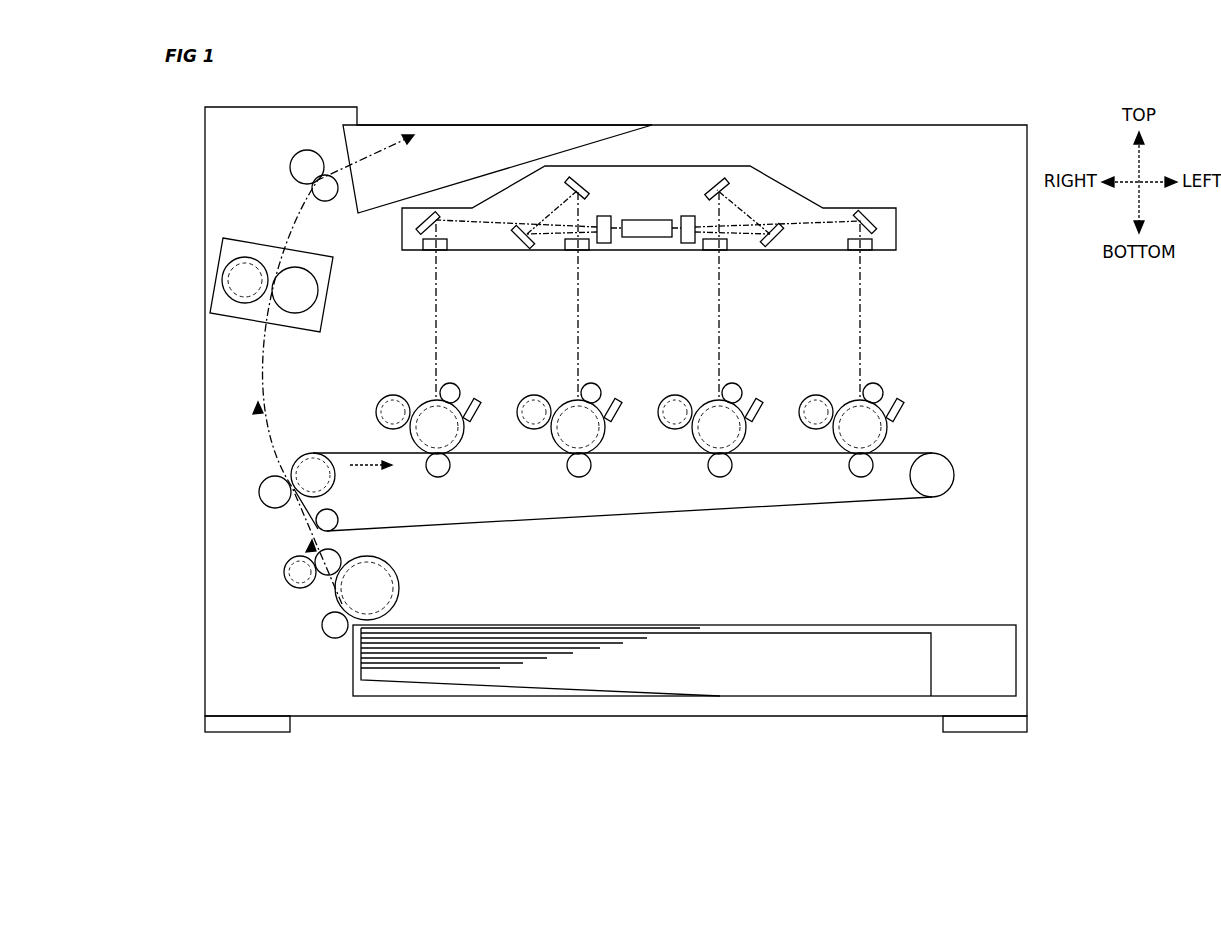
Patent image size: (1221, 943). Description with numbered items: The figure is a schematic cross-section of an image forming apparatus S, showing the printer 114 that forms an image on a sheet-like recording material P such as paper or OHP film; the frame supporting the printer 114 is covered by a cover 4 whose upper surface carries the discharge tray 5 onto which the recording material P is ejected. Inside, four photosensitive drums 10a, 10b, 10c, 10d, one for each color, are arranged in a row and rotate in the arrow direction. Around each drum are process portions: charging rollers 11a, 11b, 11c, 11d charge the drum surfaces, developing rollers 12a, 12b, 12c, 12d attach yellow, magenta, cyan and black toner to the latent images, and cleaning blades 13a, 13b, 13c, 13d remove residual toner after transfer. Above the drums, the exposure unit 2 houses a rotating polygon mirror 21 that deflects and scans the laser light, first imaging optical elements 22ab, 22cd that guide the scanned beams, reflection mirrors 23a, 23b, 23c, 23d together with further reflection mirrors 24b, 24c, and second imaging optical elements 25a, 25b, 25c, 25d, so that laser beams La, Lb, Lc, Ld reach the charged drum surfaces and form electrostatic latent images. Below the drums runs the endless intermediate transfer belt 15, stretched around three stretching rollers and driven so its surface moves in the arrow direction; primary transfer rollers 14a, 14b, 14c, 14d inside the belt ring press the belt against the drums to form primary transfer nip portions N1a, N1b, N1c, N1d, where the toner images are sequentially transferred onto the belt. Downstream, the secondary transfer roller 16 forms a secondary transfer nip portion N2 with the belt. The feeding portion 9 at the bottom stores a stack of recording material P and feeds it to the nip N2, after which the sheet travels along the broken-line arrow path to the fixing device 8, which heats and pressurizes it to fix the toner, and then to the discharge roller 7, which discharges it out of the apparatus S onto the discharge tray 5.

The exposure unit 2 is at (712, 164).
The cover 4 is at (982, 124).
The discharge tray 5 is at (492, 170).
The discharge roller 7 is at (300, 175).
The fixing device 8 is at (228, 252).
The feeding portion 9 is at (840, 626).
The photosensitive drum 10a is at (437, 427).
The photosensitive drum 10b is at (578, 427).
The photosensitive drum 10c is at (719, 427).
The photosensitive drum 10d is at (860, 427).
The charging roller 11a is at (455, 384).
The charging roller 11b is at (596, 384).
The charging roller 11c is at (737, 384).
The charging roller 11d is at (878, 384).
The developing roller 12a is at (388, 396).
The developing roller 12b is at (529, 396).
The developing roller 12c is at (670, 396).
The developing roller 12d is at (811, 396).
The cleaning blade 13a is at (478, 418).
The cleaning blade 13b is at (619, 418).
The cleaning blade 13c is at (760, 418).
The cleaning blade 13d is at (901, 418).
The primary transfer roller 14a is at (438, 477).
The primary transfer roller 14b is at (579, 477).
The primary transfer roller 14c is at (720, 477).
The primary transfer roller 14d is at (861, 477).
The intermediate transfer belt 15 is at (681, 513).
The secondary transfer roller 16 is at (262, 491).
The rotating polygon mirror 21 is at (645, 238).
The first imaging optical element 22ab is at (604, 214).
The first imaging optical element 22cd is at (686, 214).
The reflection mirror 23a is at (430, 216).
The reflection mirror 23b is at (518, 243).
The reflection mirror 23c is at (772, 243).
The reflection mirror 23d is at (870, 216).
The reflection mirror 24b is at (577, 183).
The reflection mirror 24c is at (720, 184).
The second imaging optical element 25a is at (425, 250).
The second imaging optical element 25b is at (569, 250).
The second imaging optical element 25c is at (712, 250).
The second imaging optical element 25d is at (850, 250).
The printer 114 is at (962, 319).
The laser beam La is at (438, 312).
The laser beam Lb is at (579, 306).
The laser beam Lc is at (720, 318).
The laser beam Ld is at (860, 298).
The primary transfer nip portion N1a is at (427, 462).
The primary transfer nip portion N1b is at (568, 462).
The primary transfer nip portion N1c is at (709, 462).
The primary transfer nip portion N1d is at (850, 462).
The secondary transfer nip portion N2 is at (290, 494).
The recording material P is at (527, 630).
The image forming apparatus S is at (803, 145).